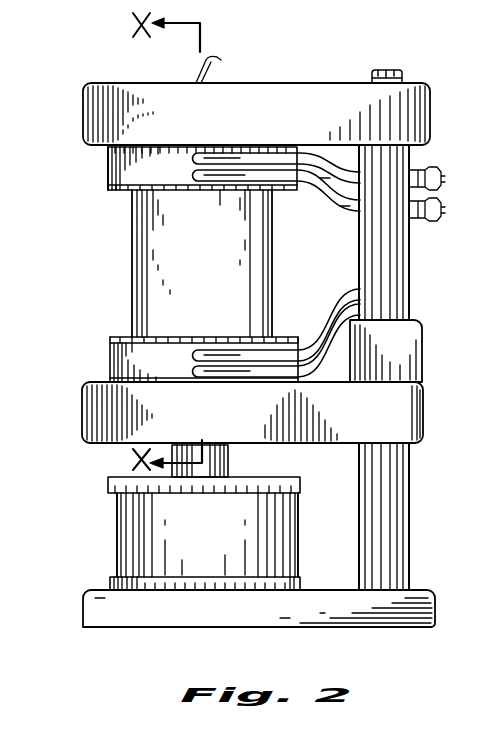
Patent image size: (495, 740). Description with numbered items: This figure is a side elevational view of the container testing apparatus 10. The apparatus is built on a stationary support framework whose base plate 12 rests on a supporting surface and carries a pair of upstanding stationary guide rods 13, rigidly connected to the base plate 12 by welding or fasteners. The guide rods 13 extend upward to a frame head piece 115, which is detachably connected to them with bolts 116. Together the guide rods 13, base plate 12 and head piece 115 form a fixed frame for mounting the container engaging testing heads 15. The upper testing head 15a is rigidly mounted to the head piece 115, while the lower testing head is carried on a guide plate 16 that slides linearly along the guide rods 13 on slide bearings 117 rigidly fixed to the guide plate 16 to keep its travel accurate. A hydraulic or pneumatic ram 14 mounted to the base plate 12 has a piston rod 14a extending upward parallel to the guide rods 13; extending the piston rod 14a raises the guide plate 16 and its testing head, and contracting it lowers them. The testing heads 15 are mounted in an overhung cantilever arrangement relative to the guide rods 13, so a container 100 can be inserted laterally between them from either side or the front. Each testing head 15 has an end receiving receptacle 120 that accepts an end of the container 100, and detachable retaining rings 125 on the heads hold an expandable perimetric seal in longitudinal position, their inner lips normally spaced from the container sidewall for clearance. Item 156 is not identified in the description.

The container testing apparatus 10 is at (235, 95).
The base plate 12 is at (420, 592).
The guide rods 13 is at (390, 250).
The ram 14 is at (311, 496).
The piston rod 14a is at (228, 458).
The testing heads 15 is at (155, 266).
The upper testing head 15a is at (108, 170).
The guide plate 16 is at (124, 405).
The container 100 is at (158, 278).
The frame head piece 115 is at (311, 102).
The bolts 116 is at (386, 68).
The slide bearings 117 is at (405, 337).
The end receiving receptacle 120 is at (278, 200).
The retaining rings 125 is at (123, 190).
The bracket insert 156 is at (137, 357).